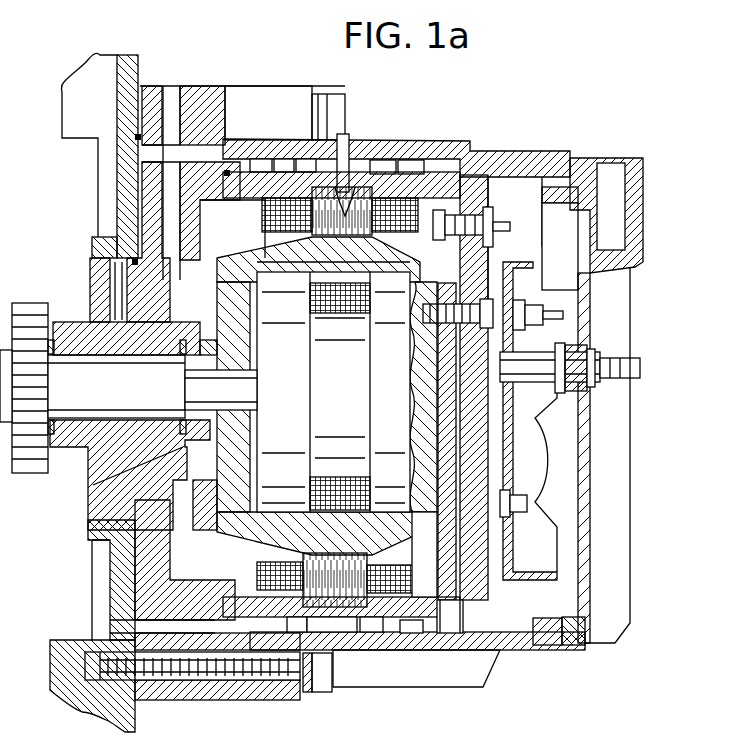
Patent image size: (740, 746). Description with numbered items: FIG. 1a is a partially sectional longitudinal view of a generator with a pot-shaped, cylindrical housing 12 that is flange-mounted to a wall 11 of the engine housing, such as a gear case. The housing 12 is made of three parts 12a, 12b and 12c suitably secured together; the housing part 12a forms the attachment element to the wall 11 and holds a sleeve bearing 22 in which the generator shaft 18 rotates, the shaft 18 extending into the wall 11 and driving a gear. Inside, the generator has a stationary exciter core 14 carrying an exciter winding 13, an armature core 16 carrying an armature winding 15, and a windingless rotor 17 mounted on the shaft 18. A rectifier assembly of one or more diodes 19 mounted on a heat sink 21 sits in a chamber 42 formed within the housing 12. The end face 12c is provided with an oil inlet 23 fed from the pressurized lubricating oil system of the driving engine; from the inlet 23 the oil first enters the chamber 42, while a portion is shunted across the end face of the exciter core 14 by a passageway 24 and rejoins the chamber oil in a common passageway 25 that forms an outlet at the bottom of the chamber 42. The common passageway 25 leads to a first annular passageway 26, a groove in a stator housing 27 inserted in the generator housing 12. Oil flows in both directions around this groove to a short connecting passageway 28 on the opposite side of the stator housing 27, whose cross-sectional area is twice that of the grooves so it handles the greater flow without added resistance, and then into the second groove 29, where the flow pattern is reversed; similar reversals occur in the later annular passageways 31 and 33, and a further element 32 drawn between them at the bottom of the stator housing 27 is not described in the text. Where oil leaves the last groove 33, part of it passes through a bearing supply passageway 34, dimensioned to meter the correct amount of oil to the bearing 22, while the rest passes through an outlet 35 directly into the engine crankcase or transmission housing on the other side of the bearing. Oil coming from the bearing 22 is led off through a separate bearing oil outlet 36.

The wall of the engine housing 11 is at (85, 690).
The housing 12 is at (363, 136).
The housing part 12a is at (197, 100).
The housing part 12b is at (470, 160).
The end face of the housing 12c is at (634, 201).
The exciter winding 13 is at (338, 297).
The exciter core 14 is at (333, 336).
The armature winding 15 is at (276, 203).
The armature core 16 is at (327, 221).
The rotor 17 is at (248, 520).
The shaft 18 is at (152, 386).
The diode 19 is at (532, 310).
The heat sink 21 is at (530, 283).
The sleeve bearing 22 is at (73, 352).
The oil inlet 23 is at (612, 178).
The passageway 24 is at (443, 378).
The common passageway 25 is at (438, 617).
The first annular passageway 26 is at (412, 623).
The stator housing 27 is at (445, 177).
The connecting passageway 28 is at (394, 168).
The second groove 29 is at (372, 623).
The annular passageway 31 is at (312, 677).
The ring 32 is at (342, 623).
The annular passageway 33 is at (258, 660).
The bearing supply passageway 34 is at (170, 197).
The outlet 35 is at (145, 626).
The bearing oil outlet 36 is at (100, 489).
The chamber 42 is at (550, 217).